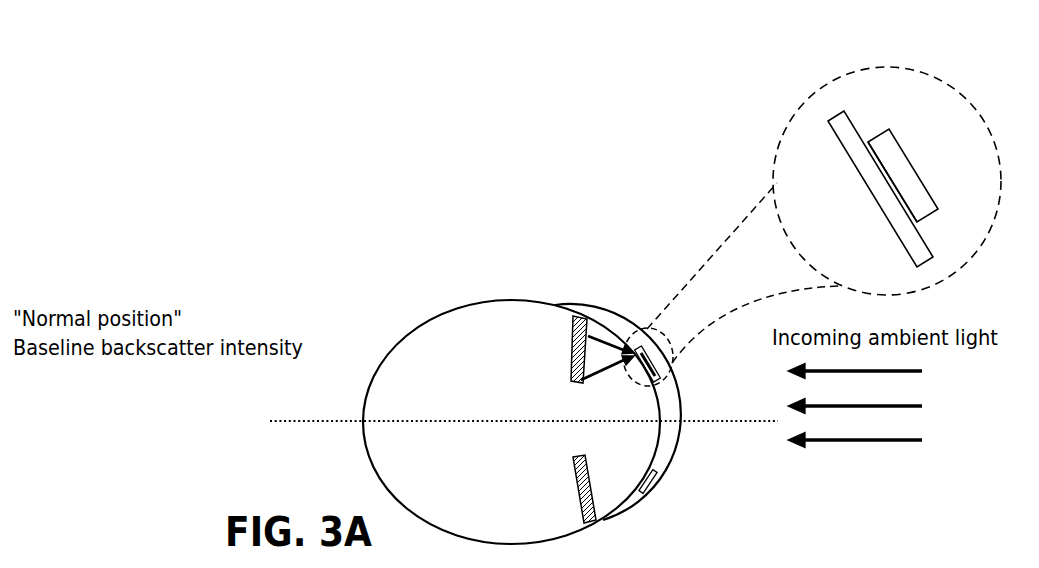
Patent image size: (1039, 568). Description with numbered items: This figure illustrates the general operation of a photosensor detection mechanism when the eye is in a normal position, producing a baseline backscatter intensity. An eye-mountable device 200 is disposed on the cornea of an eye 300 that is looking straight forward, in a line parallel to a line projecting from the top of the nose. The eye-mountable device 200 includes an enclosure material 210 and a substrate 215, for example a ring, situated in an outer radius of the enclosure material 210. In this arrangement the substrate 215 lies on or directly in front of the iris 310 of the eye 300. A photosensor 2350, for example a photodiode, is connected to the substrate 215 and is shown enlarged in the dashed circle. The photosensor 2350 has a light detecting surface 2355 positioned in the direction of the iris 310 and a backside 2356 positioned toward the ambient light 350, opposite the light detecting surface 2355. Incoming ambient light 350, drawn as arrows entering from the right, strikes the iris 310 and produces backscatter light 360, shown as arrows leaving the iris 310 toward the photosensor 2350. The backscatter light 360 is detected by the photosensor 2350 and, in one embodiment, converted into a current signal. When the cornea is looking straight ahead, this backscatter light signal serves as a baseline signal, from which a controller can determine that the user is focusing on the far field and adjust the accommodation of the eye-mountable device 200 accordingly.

The eye 300 is at (453, 308).
The iris 310 is at (572, 322).
The eye-mountable device 200 is at (624, 312).
The enclosure material 210 is at (675, 459).
The substrate 215 is at (652, 487).
The backscatter light 360 is at (598, 376).
The ambient light 350 is at (879, 406).
The photosensor 2350 is at (892, 138).
The light detecting surface 2355 is at (880, 180).
The backside 2356 is at (920, 160).